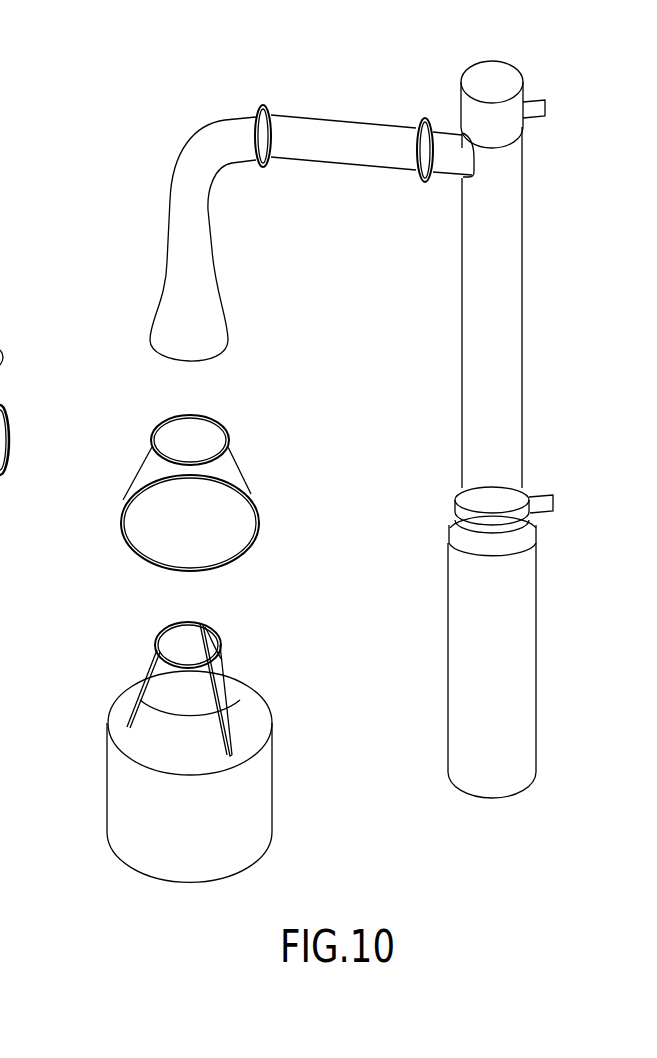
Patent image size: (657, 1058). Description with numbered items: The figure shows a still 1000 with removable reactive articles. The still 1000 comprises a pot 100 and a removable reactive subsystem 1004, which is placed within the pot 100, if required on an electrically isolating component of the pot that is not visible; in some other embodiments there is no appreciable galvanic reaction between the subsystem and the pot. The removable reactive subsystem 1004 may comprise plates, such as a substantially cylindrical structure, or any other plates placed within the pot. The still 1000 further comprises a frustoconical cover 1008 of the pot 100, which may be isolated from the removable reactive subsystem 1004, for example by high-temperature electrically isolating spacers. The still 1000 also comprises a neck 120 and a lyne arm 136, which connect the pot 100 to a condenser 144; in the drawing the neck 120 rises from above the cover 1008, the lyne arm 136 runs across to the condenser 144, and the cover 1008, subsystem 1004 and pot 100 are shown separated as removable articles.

The still 1000 is at (173, 99).
The neck 120 is at (177, 293).
The lyne arm 136 is at (351, 143).
The condenser 144 is at (543, 289).
The frustoconical cover 1008 is at (212, 518).
The removable reactive subsystem 1004 is at (227, 680).
The pot 100 is at (127, 802).